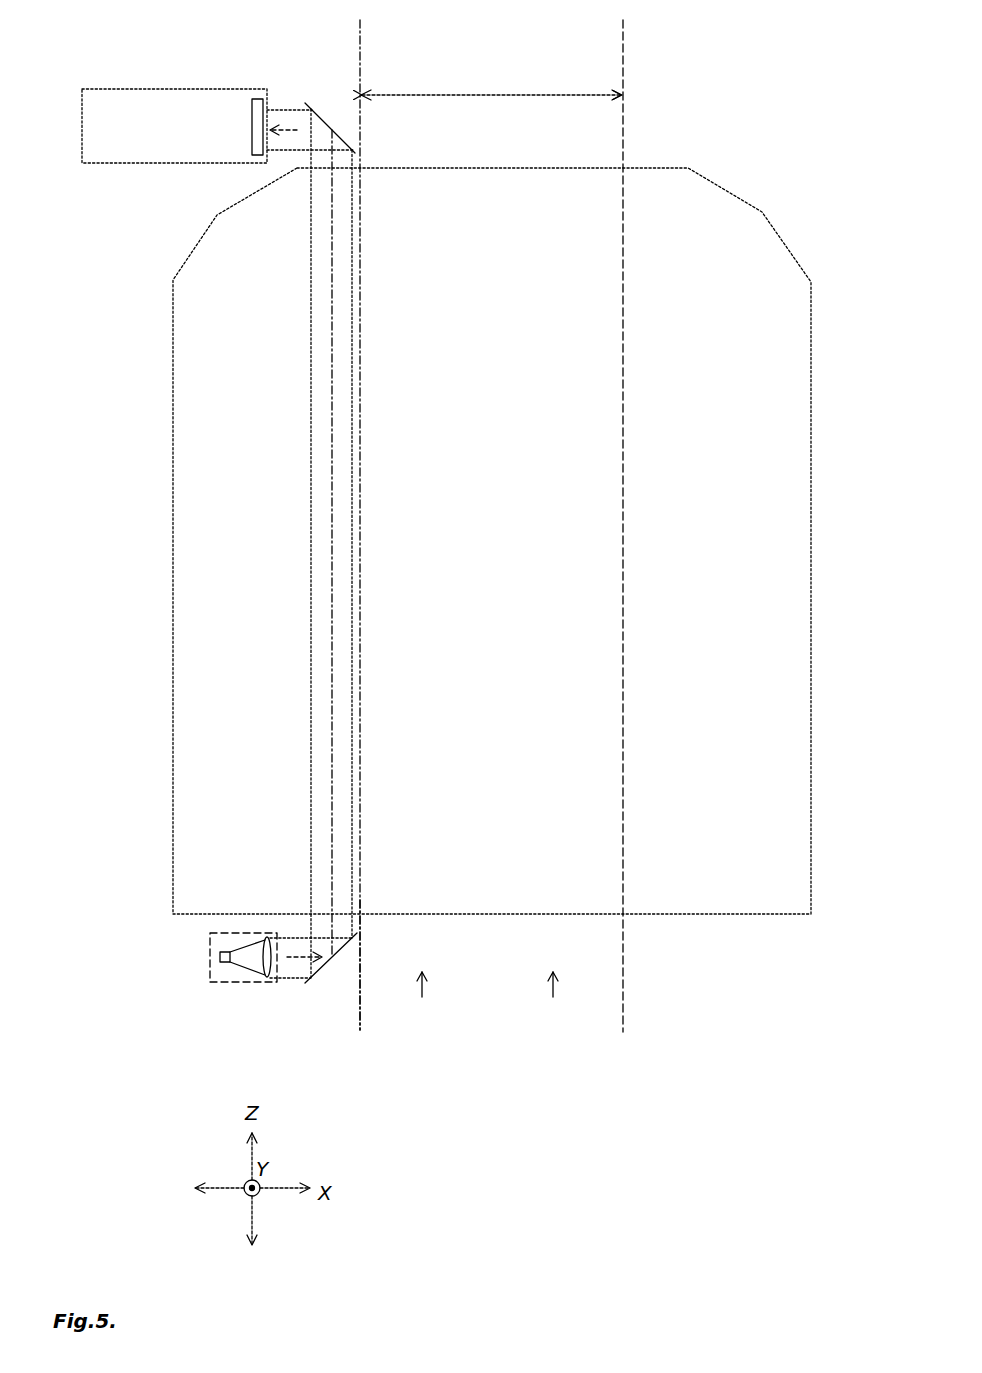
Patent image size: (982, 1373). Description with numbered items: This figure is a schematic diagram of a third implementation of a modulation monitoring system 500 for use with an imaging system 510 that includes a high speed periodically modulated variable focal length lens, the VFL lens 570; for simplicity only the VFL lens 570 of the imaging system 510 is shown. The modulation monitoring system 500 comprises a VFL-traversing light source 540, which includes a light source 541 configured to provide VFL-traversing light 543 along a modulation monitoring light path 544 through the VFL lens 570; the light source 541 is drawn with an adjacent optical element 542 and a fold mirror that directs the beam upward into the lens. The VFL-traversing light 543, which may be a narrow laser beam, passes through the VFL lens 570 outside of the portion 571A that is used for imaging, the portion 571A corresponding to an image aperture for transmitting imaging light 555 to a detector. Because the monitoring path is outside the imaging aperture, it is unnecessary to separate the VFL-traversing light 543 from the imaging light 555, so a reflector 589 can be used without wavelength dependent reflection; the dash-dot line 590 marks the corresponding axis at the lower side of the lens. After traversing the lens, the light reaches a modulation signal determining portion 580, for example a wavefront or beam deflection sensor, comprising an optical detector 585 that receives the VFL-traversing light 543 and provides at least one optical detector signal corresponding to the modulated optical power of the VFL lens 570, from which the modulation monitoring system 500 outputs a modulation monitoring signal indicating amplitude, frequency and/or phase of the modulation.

The modulation monitoring system 500 is at (118, 60).
The imaging system 510 is at (718, 92).
The VFL-traversing light source 540 is at (210, 945).
The light source 541 is at (225, 965).
The collimating lens 542 is at (267, 978).
The VFL-traversing light 543 is at (283, 128).
The modulation monitoring light path 544 is at (333, 638).
The imaging light 555 is at (553, 992).
The variable focal length (VFL) lens 570 is at (665, 168).
The portion of the VFL lens used for imaging 571A is at (424, 92).
The modulation signal determining portion 580 is at (230, 88).
The optical detector 585 is at (256, 98).
The reflector 589 is at (318, 117).
The reference axis 590 is at (340, 952).